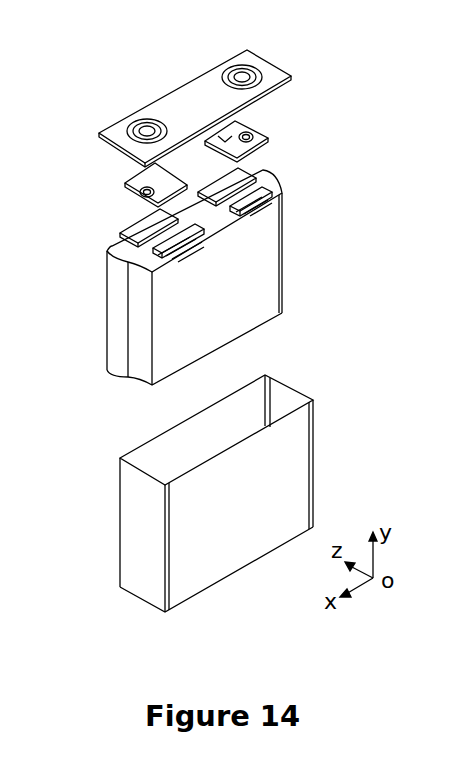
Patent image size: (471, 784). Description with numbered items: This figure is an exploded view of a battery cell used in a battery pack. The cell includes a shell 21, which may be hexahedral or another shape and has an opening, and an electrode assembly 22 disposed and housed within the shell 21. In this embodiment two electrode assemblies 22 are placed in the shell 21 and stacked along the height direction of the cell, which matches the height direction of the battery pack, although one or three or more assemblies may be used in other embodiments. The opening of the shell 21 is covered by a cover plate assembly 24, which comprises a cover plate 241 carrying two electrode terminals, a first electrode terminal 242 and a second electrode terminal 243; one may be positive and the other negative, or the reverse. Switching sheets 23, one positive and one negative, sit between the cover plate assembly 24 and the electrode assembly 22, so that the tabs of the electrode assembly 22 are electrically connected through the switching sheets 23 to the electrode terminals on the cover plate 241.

The shell 21 is at (292, 467).
The electrode assembly 22 is at (141, 330).
The switching sheet 23 is at (268, 141).
The cover plate assembly 24 is at (215, 86).
The cover plate 241 is at (292, 74).
The first electrode terminal 242 is at (136, 119).
The second electrode terminal 243 is at (241, 65).